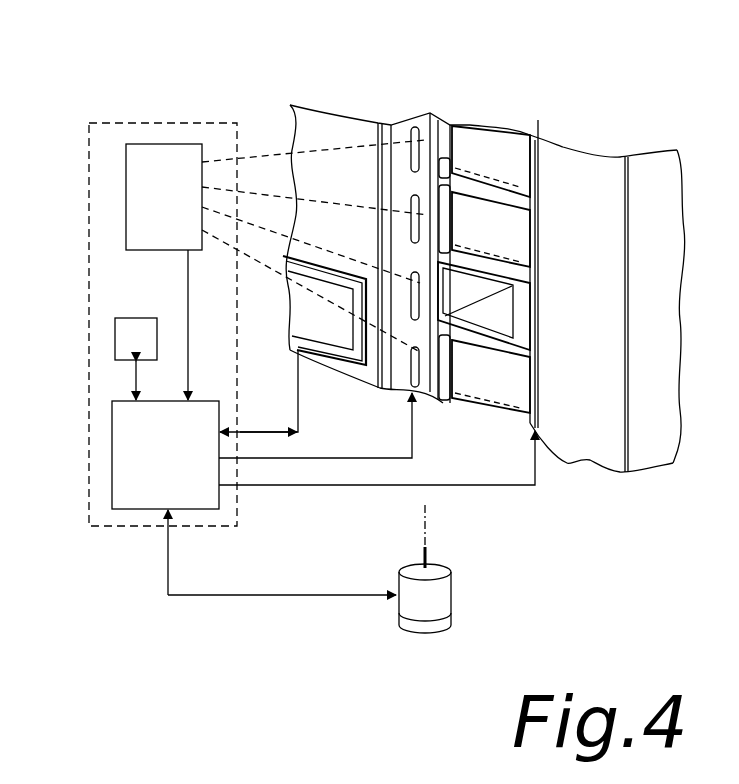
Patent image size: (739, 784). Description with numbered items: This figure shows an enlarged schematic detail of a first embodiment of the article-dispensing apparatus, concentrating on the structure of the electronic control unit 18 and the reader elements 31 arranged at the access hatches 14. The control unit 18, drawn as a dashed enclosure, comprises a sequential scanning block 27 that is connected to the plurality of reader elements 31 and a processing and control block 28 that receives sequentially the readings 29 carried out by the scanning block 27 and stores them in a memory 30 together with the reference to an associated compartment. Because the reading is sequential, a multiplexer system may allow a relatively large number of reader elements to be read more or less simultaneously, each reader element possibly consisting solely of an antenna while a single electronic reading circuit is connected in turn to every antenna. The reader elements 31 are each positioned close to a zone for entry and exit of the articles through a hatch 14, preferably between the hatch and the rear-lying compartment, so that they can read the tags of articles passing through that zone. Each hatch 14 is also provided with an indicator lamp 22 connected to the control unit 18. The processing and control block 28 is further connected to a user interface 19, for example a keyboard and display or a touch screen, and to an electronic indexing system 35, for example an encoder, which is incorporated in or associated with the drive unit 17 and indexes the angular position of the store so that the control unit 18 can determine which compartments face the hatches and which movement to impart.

The access hatch 14 is at (487, 148).
The drive unit 17 is at (448, 590).
The electronic control unit 18 is at (170, 123).
The user interface 19 is at (320, 325).
The indicator lamp 22 is at (420, 130).
The sequential scanning block 27 is at (133, 175).
The processing and control block 28 is at (125, 453).
The readings 29 is at (186, 293).
The memory 30 is at (118, 343).
The reader elements 31 is at (535, 168).
The electronic indexing system 35 is at (445, 625).